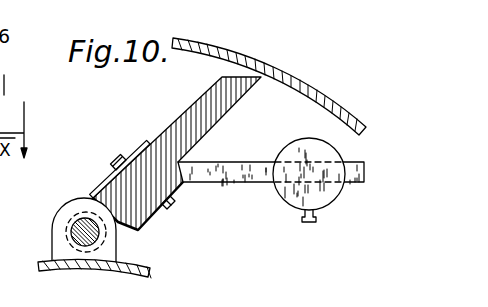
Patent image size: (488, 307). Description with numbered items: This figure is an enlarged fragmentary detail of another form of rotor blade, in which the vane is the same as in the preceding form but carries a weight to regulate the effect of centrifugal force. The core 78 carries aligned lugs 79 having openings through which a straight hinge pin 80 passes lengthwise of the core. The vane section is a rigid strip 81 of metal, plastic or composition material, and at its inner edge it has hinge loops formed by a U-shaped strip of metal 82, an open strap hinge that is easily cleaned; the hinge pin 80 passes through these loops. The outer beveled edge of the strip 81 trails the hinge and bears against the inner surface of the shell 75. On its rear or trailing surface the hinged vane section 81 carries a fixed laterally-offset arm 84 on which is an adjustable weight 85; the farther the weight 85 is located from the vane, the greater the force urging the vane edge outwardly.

The shell 75 is at (284, 70).
The core 78 is at (137, 267).
The lugs 79 is at (62, 209).
The hinge pin 80 is at (71, 232).
The vane section strip 81 is at (186, 111).
The U-shaped strip hinge loops 82 is at (110, 183).
The laterally-offset arm 84 is at (252, 183).
The adjustable weight 85 is at (333, 205).